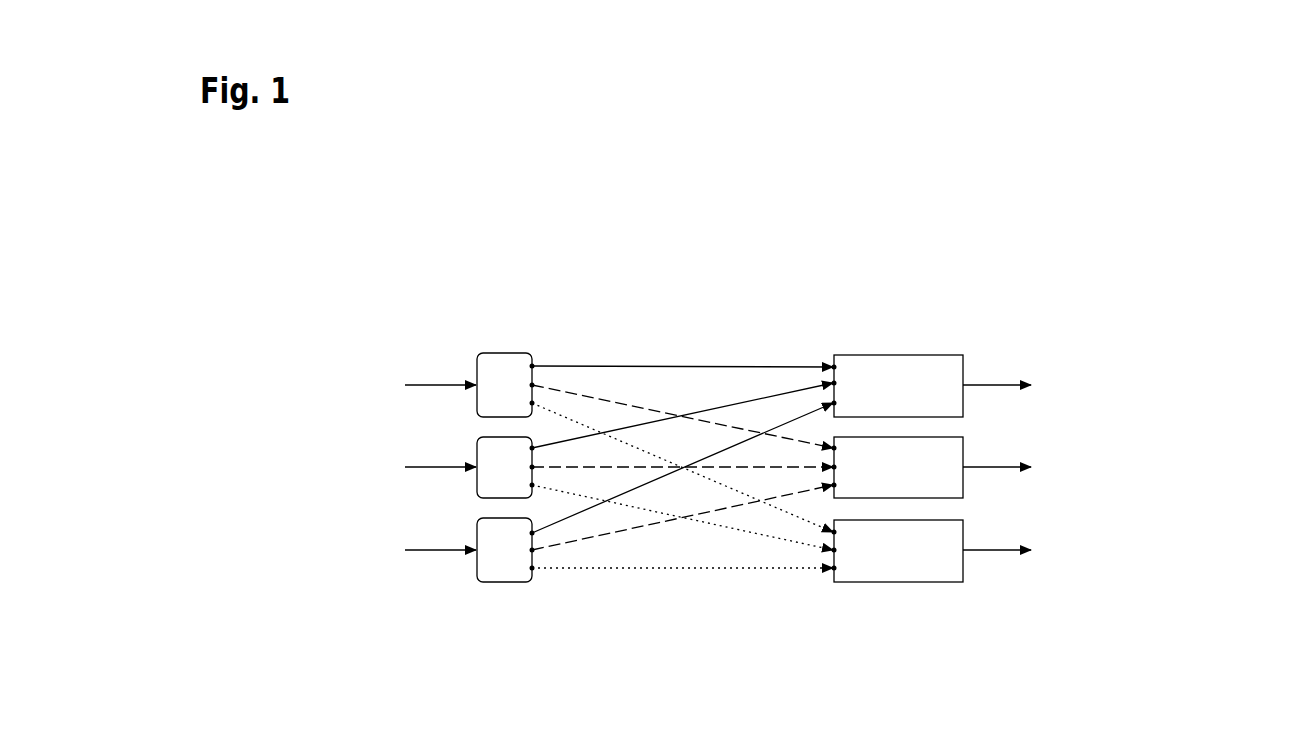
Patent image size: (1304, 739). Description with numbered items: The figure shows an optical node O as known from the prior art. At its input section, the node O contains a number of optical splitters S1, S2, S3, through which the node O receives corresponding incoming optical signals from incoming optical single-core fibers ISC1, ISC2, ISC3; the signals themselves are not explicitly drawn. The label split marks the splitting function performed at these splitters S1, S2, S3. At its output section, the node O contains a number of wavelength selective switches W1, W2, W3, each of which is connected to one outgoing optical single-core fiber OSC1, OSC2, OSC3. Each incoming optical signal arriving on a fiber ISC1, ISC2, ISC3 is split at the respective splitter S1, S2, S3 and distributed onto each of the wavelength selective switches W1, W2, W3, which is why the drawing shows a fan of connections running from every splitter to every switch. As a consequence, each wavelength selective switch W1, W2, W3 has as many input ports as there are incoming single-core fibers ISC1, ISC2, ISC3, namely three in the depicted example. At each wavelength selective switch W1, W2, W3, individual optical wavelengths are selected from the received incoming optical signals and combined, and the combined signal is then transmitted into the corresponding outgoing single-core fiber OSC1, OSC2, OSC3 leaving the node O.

The optical node O is at (287, 256).
The splitter split is at (488, 353).
The optical splitter S1 is at (520, 353).
The optical splitter S2 is at (477, 483).
The optical splitter S3 is at (503, 582).
The wavelength selective switch W1 is at (910, 355).
The wavelength selective switch W2 is at (963, 483).
The wavelength selective switch W3 is at (898, 582).
The incoming optical single-core fiber ISC1 is at (433, 385).
The incoming optical single-core fiber ISC2 is at (435, 467).
The incoming optical single-core fiber ISC3 is at (433, 550).
The outgoing optical single-core fiber OSC1 is at (993, 382).
The outgoing optical single-core fiber OSC2 is at (990, 464).
The outgoing optical single-core fiber OSC3 is at (993, 552).